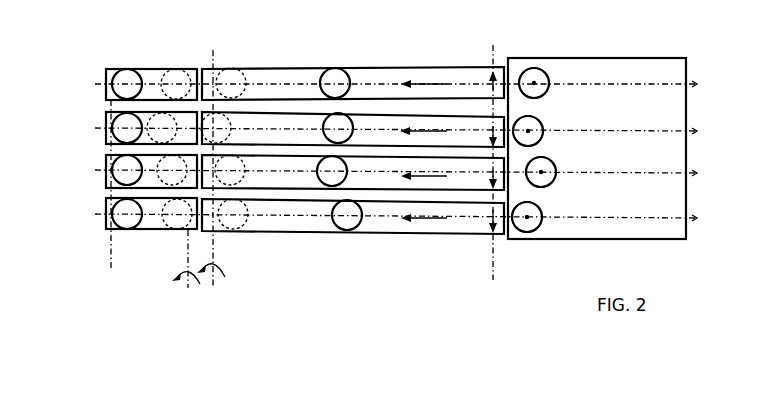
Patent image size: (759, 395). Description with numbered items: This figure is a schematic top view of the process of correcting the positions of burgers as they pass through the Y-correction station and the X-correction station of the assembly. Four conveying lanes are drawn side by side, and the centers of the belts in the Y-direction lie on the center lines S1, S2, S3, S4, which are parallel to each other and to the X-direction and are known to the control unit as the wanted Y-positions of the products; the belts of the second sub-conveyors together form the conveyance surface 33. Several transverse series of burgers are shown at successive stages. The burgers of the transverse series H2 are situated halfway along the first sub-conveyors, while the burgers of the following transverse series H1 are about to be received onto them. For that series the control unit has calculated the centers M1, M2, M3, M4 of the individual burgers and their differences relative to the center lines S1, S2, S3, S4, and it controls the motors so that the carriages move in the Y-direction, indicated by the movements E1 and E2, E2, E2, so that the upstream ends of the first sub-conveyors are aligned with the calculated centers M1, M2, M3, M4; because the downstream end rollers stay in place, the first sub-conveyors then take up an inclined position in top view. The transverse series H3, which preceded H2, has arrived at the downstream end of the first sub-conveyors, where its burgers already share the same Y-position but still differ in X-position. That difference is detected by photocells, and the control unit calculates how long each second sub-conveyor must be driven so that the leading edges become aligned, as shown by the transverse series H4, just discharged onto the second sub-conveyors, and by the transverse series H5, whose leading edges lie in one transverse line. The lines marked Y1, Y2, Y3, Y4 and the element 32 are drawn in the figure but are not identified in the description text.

The transverse series of burgers H1 is at (528, 69).
The transverse series of burgers H2 is at (336, 68).
The transverse series of burgers H3 is at (233, 69).
The transverse series of burgers H4 is at (178, 69).
The transverse series of burgers H5 is at (127, 70).
The calculated center M1 is at (534, 83).
The calculated center M2 is at (528, 131).
The calculated center M3 is at (541, 172).
The calculated center M4 is at (527, 217).
The center line S1 is at (100, 84).
The center line S2 is at (100, 128).
The center line S3 is at (100, 170).
The center line S4 is at (100, 214).
The Y-direction movement of carriage E1 is at (490, 74).
The Y-direction movement of carriage E2 is at (491, 131).
The first axis Y1 is at (410, 84).
The second axis Y2 is at (410, 131).
The third axis Y3 is at (410, 173).
The fourth axis Y4 is at (410, 218).
The second segment 32 is at (290, 233).
The conveyance surface 33 is at (152, 216).